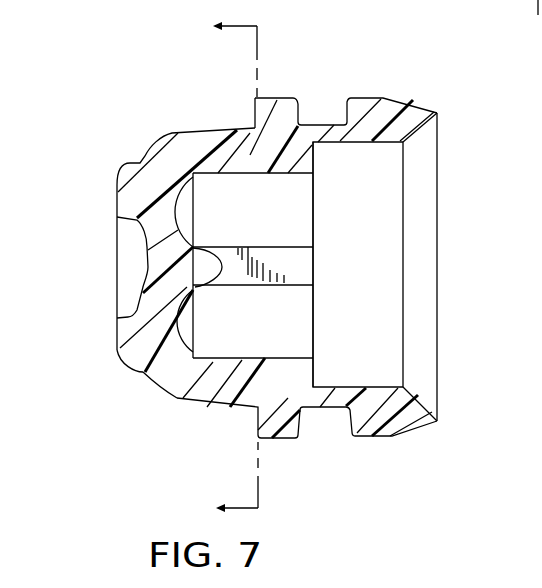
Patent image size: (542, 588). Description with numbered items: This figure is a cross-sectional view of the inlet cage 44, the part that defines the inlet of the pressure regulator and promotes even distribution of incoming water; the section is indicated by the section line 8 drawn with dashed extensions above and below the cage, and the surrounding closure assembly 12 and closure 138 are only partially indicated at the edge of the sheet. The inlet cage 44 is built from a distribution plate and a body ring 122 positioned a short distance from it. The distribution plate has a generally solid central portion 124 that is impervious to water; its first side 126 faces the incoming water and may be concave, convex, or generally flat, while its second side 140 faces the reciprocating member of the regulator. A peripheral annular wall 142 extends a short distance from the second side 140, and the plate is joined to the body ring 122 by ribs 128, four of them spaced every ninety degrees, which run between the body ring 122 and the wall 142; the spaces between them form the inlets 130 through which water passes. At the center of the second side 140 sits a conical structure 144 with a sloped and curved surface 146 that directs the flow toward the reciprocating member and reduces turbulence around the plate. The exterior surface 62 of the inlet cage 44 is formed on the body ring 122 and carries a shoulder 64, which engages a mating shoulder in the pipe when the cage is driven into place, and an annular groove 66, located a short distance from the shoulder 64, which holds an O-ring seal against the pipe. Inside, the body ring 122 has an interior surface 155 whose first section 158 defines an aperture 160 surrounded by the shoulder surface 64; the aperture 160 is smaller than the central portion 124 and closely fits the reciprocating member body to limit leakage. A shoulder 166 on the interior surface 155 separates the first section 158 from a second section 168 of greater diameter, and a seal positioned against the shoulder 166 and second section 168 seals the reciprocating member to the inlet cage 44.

The section line 8- 8 is at (225, 269).
The closure assembly 12 is at (534, 22).
The inlet cage 44 is at (350, 70).
The exterior surface 62 is at (272, 97).
The shoulder 64 is at (255, 110).
The annular groove 66 is at (353, 86).
The body ring 122 is at (416, 452).
The central portion 124 is at (133, 363).
The first side 126 is at (118, 348).
The ribs 128 is at (187, 393).
The inlets 130 is at (220, 182).
The closure 138 is at (501, 4).
The second side 140 is at (217, 342).
The peripheral annular wall 142 is at (195, 207).
The conical structure 144 is at (192, 287).
The sloped and curved surface 146 is at (195, 227).
The interior surface 155 is at (356, 389).
The first section 158 is at (306, 358).
The aperture 160 is at (160, 372).
The shoulder 166 is at (315, 386).
The second section 168 is at (392, 390).